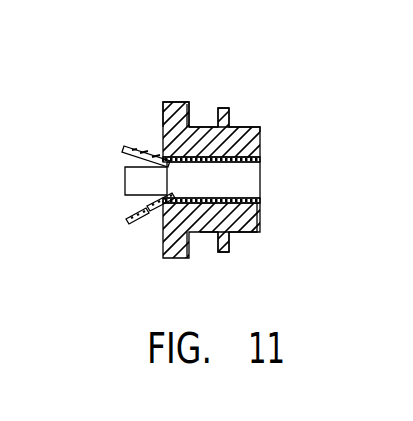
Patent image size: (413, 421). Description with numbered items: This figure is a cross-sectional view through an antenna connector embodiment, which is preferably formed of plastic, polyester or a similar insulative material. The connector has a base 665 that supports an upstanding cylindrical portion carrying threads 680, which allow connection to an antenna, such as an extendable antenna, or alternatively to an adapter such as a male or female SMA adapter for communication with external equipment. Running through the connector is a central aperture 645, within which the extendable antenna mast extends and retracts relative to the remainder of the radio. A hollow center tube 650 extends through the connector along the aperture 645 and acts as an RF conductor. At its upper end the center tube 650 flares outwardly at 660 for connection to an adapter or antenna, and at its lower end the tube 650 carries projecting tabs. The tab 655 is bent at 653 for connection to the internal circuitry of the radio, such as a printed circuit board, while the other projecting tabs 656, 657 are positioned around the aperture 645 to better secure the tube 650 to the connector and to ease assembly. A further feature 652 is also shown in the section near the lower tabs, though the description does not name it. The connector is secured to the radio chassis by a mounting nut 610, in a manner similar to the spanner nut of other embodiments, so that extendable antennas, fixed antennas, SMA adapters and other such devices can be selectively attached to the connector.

The mounting nut 610 is at (226, 108).
The central aperture 645 is at (253, 174).
The hollow center tube 650 is at (180, 150).
The ring segment 652 is at (138, 203).
The bend 653 is at (152, 213).
The projecting tab 655 is at (130, 222).
The projecting tab 656 is at (125, 179).
The projecting tab 657 is at (127, 150).
The outward flare 660 is at (263, 206).
The base 665 is at (172, 102).
The threads 680 is at (244, 127).